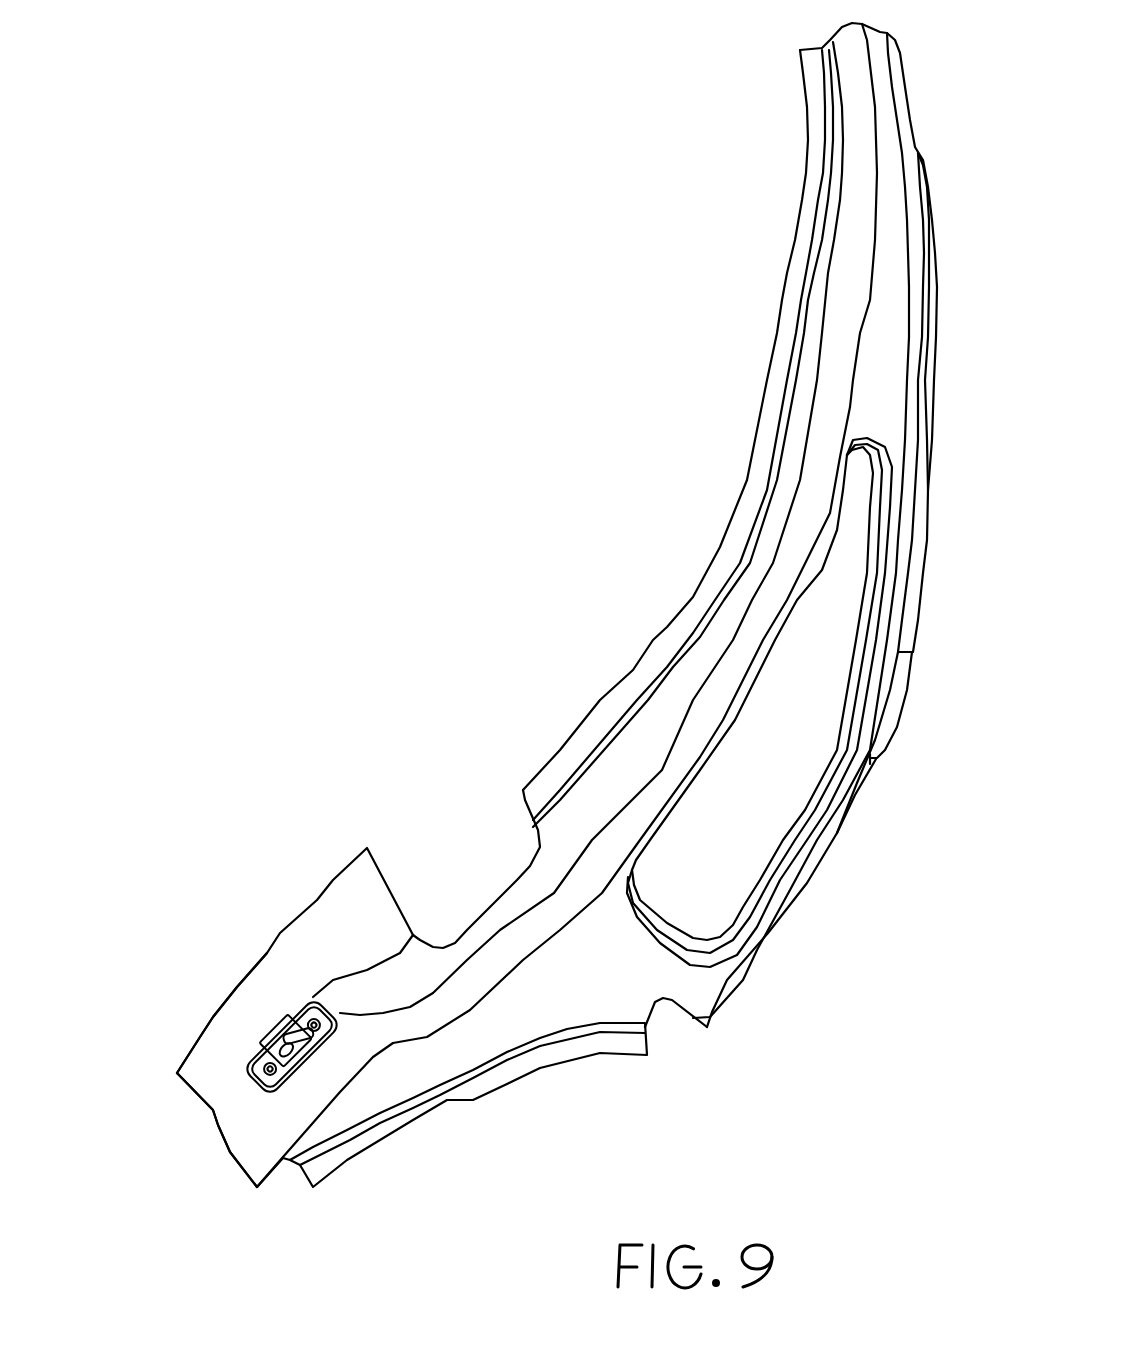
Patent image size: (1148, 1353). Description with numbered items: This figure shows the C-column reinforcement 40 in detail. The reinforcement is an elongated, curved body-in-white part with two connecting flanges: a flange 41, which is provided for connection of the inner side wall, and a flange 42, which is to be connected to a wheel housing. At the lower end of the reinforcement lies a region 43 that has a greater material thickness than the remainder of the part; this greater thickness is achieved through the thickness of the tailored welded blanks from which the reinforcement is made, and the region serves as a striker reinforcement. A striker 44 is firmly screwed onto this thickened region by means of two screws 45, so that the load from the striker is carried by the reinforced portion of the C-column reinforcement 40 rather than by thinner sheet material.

The C-column reinforcement 40 is at (597, 605).
The flange 41 is at (320, 913).
The flange 42 is at (537, 1055).
The region 43 is at (221, 1147).
The striker 44 is at (168, 1039).
The screws 45 is at (308, 1010).